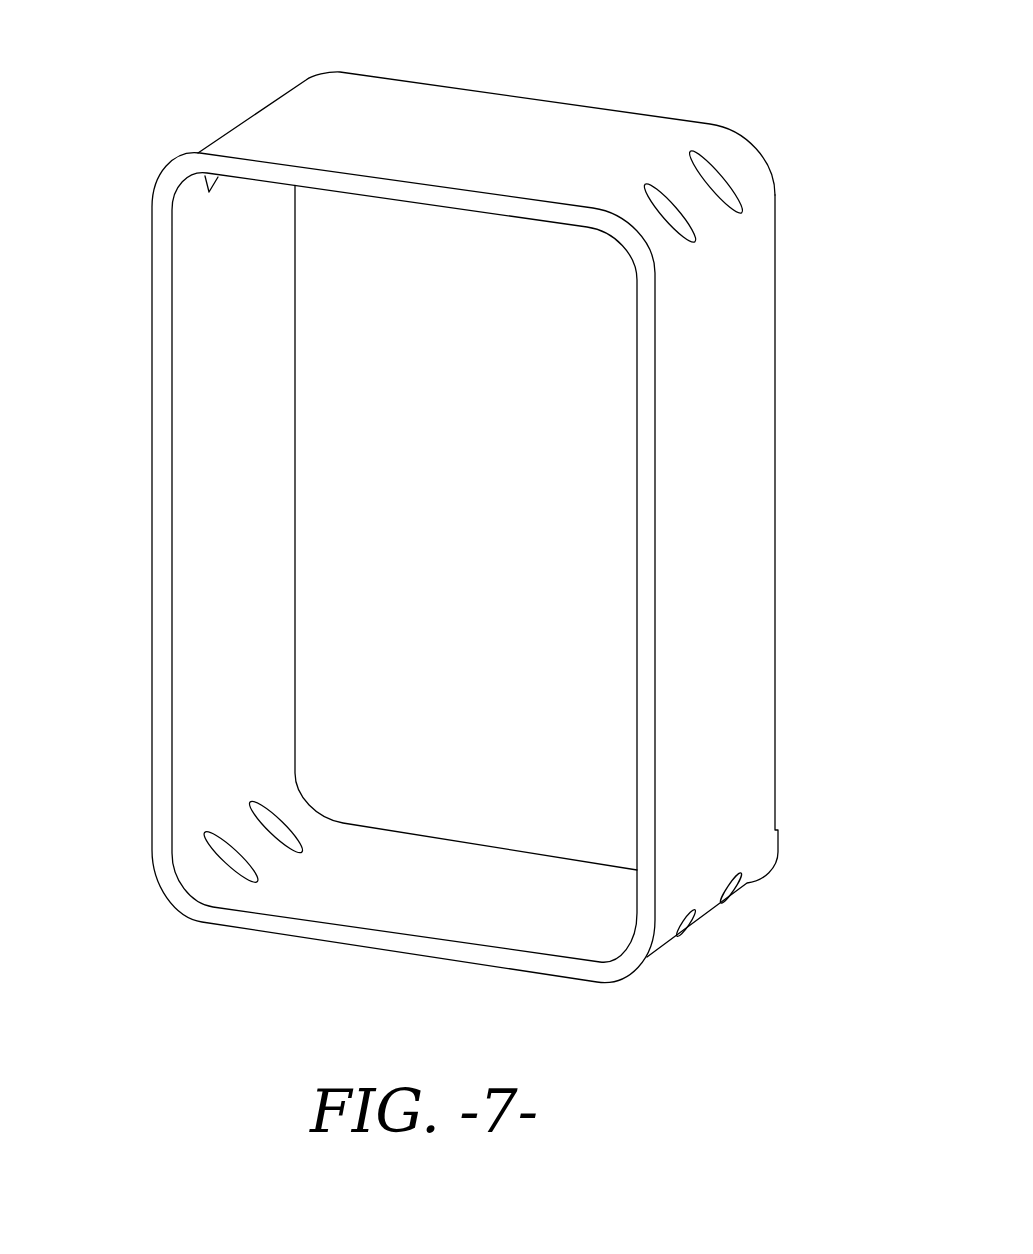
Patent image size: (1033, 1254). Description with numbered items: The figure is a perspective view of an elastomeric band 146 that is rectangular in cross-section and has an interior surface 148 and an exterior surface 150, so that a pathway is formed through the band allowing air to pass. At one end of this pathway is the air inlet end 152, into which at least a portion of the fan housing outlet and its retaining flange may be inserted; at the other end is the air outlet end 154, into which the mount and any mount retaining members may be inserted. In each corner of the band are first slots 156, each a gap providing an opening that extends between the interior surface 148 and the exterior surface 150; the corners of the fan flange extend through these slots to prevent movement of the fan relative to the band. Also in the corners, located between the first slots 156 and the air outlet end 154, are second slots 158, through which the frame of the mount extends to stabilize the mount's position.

The elastomeric band 146 is at (485, 90).
The interior surface 148 is at (207, 560).
The exterior surface 150 is at (740, 628).
The air inlet end 152 is at (457, 755).
The air outlet end 154 is at (535, 432).
The first slots 156 is at (647, 183).
The second slots 158 is at (703, 150).